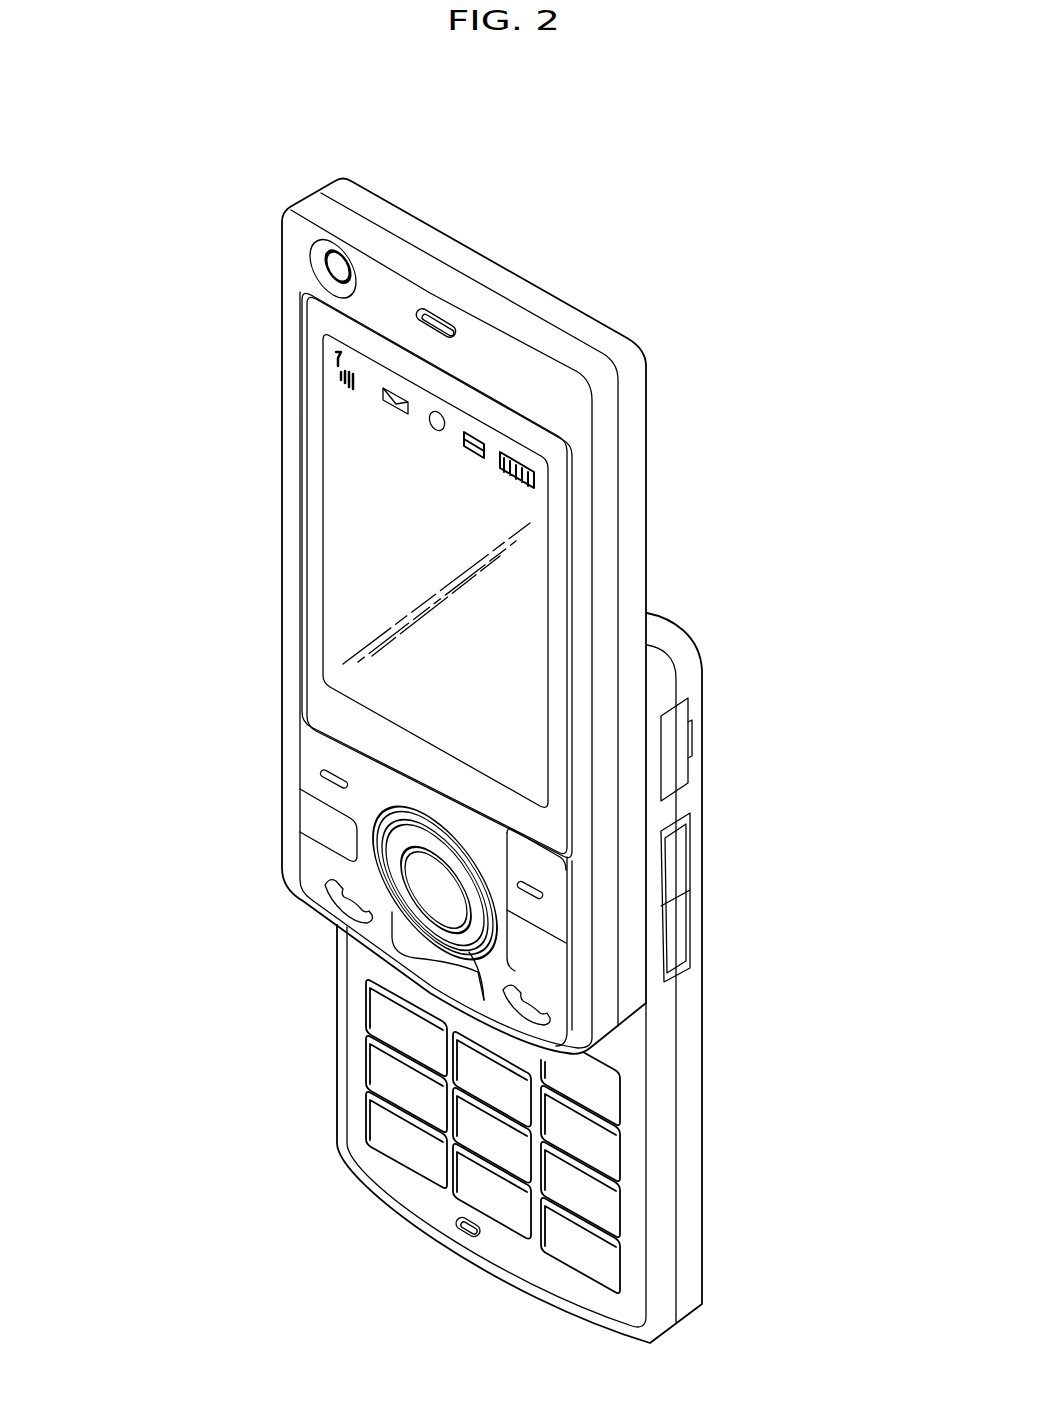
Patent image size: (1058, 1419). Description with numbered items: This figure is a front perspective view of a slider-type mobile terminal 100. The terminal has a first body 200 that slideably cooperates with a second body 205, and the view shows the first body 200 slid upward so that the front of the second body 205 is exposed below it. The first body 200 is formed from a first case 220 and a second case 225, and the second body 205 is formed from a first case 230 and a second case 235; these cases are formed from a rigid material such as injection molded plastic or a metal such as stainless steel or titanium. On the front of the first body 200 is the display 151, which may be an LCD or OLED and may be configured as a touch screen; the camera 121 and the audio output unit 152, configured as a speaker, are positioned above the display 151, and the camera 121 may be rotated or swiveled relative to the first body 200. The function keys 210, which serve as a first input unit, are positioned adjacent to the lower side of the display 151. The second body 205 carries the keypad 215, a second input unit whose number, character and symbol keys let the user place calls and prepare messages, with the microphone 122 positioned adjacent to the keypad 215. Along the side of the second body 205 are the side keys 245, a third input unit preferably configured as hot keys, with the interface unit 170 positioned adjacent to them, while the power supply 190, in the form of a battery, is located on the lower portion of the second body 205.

The mobile terminal 100 is at (695, 213).
The first body 200 is at (230, 372).
The second body 205 is at (322, 1030).
The camera 121 is at (342, 268).
The audio output unit 152 is at (437, 320).
The display 151 is at (343, 502).
The second case 225 is at (640, 434).
The first case 220 is at (612, 486).
The first case 230 is at (658, 663).
The second case 235 is at (693, 693).
The interface unit 170 is at (680, 740).
The side keys 245 is at (685, 930).
The power supply 190 is at (695, 1127).
The function keys 210 is at (317, 817).
The keypad 215 is at (372, 1108).
The microphone 122 is at (467, 1236).